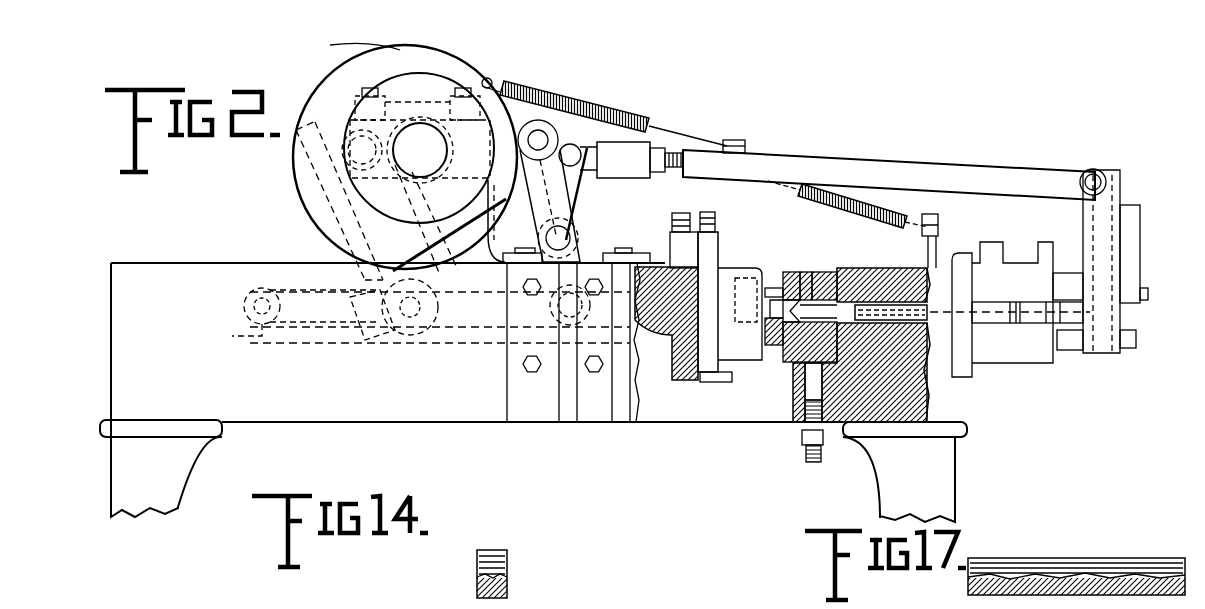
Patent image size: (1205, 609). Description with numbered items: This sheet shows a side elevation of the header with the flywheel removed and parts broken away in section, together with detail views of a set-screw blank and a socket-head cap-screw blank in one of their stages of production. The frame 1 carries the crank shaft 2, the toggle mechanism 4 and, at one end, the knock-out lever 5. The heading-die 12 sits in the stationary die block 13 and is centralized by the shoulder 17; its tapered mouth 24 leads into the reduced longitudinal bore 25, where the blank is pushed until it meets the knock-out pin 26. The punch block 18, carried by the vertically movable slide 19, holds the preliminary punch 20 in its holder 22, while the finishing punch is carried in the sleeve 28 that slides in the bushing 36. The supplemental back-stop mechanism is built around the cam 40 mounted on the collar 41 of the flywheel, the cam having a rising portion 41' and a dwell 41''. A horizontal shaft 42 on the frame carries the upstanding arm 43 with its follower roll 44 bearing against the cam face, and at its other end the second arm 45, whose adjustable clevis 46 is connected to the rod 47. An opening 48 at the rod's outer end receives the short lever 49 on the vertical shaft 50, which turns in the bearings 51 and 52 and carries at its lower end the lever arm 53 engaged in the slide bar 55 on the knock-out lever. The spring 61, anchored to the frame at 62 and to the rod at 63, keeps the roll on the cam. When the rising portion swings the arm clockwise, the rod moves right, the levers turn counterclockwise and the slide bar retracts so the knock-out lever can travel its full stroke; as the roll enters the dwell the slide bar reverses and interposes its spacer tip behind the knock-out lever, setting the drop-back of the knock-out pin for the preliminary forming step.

The frame 1 is at (772, 421).
The crank shaft 2 is at (442, 150).
The toggle mechanism 4 is at (488, 322).
The knock-out lever 5 is at (1012, 323).
The heading-die 12 is at (810, 300).
The die block 13 is at (792, 272).
The shoulder 17 is at (817, 272).
The punch block 18 is at (722, 250).
The slide 19 is at (700, 380).
The preliminary punch 20 is at (760, 292).
The holder 22 is at (780, 275).
The tapered mouth 24 is at (778, 342).
The longitudinal bore 25 is at (798, 362).
The knock-out pin 26 is at (880, 305).
The sleeve 28 is at (718, 355).
The bushing 36 is at (762, 342).
The cam 40 is at (372, 55).
The collar 41 is at (377, 200).
The rising portion 41' is at (345, 46).
The dwell 41'' is at (457, 225).
The horizontal shaft 42 is at (572, 232).
The upstanding arm 43 is at (570, 212).
The follower roll 44 is at (552, 137).
The second arm 45 is at (583, 170).
The adjustable clevis 46 is at (641, 172).
The rod 47 is at (902, 168).
The opening 48 is at (1094, 170).
The short lever 49 is at (1120, 180).
The vertical shaft 50 is at (1090, 222).
The bearing 51 is at (1136, 275).
The bearing 52 is at (1072, 350).
The lever arm 53 is at (1090, 314).
The slide bar 55 is at (1056, 324).
The spring 61 is at (580, 108).
The spring anchor on frame 62 is at (490, 80).
The spring connection to rod 63 is at (736, 140).